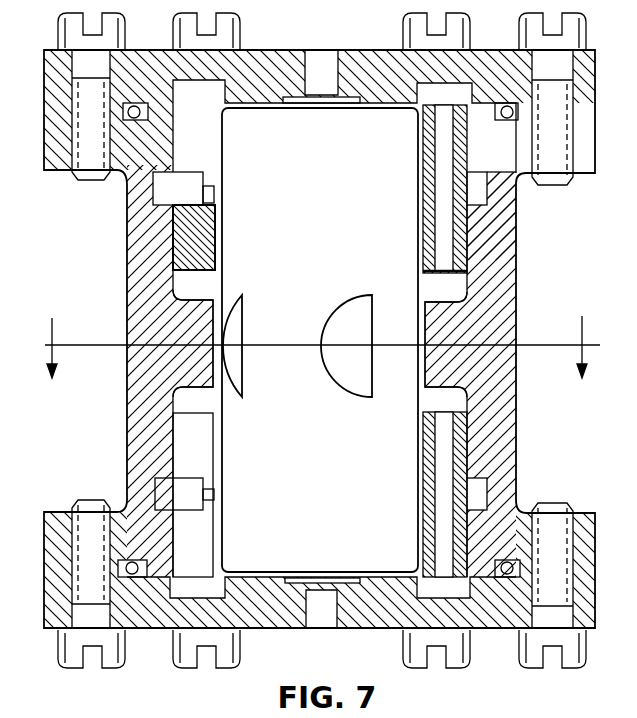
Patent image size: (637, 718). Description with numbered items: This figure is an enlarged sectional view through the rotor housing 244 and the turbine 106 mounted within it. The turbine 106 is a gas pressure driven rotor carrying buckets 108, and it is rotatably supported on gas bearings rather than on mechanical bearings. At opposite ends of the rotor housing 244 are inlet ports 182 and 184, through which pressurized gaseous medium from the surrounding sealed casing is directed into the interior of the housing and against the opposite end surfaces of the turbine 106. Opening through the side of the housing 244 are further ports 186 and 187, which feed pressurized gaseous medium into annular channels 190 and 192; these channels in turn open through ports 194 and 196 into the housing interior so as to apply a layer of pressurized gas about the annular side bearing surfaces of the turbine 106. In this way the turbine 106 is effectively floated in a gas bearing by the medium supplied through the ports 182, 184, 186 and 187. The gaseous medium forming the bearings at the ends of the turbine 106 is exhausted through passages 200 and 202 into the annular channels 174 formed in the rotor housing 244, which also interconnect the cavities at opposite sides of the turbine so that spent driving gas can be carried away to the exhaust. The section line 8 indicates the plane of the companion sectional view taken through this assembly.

The section line 8- 8 is at (322, 336).
The turbine 106 is at (283, 376).
The buckets 108 is at (345, 312).
The annular channels 174 is at (180, 398).
The inlet port 182 is at (322, 95).
The inlet port 184 is at (323, 586).
The port 186 is at (507, 494).
The port 187 is at (507, 196).
The annular channel 190 is at (160, 488).
The annular channel 192 is at (475, 190).
The port 194 is at (214, 495).
The port 196 is at (214, 209).
The exhaust passage 200 is at (440, 441).
The exhaust passage 202 is at (430, 216).
The rotor housing 244 is at (137, 253).